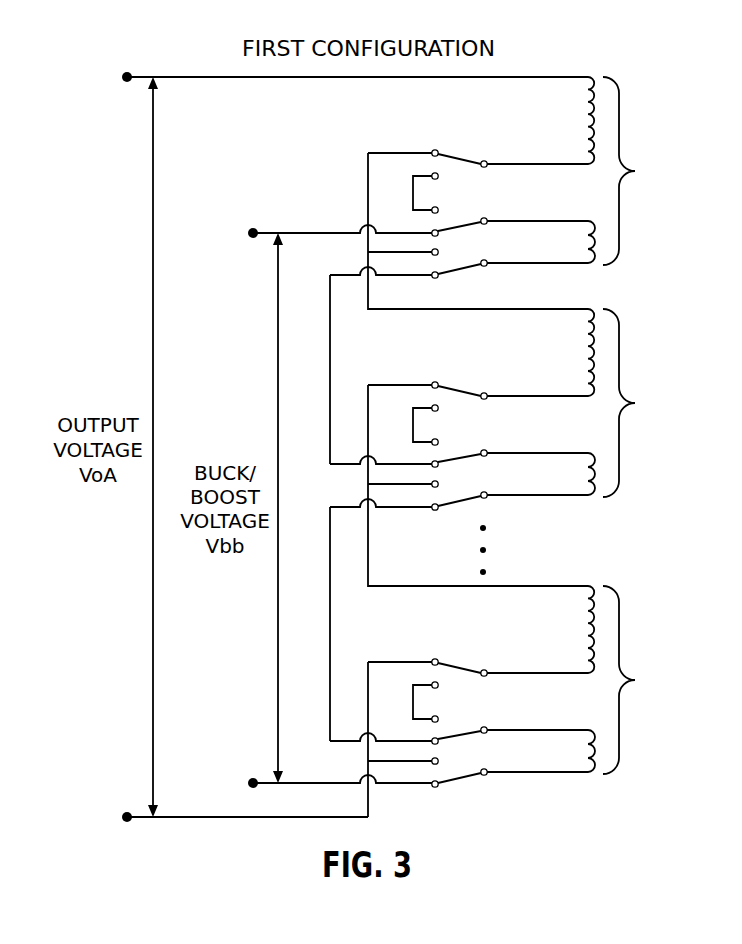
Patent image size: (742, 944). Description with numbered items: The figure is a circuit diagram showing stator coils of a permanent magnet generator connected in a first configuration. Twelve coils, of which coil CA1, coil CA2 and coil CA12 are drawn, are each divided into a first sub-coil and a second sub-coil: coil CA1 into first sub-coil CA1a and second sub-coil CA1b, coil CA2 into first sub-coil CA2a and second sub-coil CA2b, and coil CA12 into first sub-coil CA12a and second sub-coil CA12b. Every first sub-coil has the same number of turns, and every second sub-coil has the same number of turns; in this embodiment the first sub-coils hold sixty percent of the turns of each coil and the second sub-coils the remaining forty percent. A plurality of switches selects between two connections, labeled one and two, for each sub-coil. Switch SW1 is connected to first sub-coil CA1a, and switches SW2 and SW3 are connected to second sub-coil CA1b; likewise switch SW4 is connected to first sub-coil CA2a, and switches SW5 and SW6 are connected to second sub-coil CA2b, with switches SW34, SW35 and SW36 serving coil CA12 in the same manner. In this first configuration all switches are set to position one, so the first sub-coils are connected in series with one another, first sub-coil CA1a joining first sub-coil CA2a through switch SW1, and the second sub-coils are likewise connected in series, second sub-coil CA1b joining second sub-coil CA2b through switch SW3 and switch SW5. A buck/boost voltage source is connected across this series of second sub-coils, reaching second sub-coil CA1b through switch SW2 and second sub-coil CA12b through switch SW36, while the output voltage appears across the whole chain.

The switch SW1 is at (469, 144).
The switch SW2 is at (473, 219).
The switch SW3 is at (473, 276).
The switch SW4 is at (469, 376).
The switch SW5 is at (473, 451).
The switch SW6 is at (473, 508).
The switch SW34 is at (483, 635).
The switch SW35 is at (473, 727).
The switch SW36 is at (473, 785).
The coil CA1 is at (586, 171).
The first sub-coil CA1a is at (540, 120).
The second sub-coil CA1b is at (541, 242).
The coil CA2 is at (586, 403).
The first sub-coil CA2a is at (540, 352).
The second sub-coil CA2b is at (541, 474).
The coil CA12 is at (593, 680).
The first sub-coil CA12a is at (540, 629).
The second sub-coil CA12b is at (541, 751).